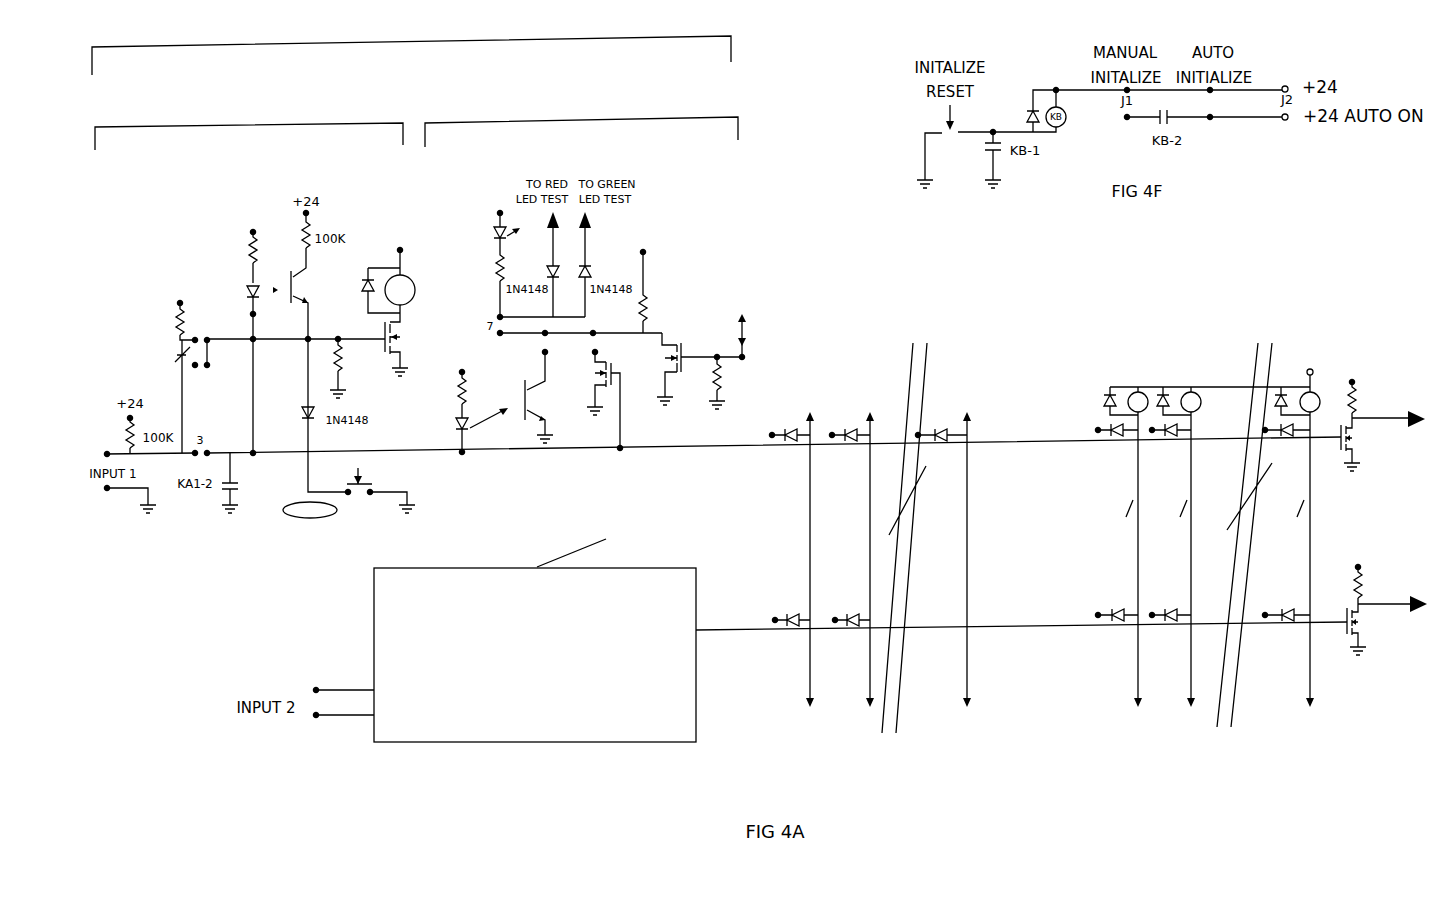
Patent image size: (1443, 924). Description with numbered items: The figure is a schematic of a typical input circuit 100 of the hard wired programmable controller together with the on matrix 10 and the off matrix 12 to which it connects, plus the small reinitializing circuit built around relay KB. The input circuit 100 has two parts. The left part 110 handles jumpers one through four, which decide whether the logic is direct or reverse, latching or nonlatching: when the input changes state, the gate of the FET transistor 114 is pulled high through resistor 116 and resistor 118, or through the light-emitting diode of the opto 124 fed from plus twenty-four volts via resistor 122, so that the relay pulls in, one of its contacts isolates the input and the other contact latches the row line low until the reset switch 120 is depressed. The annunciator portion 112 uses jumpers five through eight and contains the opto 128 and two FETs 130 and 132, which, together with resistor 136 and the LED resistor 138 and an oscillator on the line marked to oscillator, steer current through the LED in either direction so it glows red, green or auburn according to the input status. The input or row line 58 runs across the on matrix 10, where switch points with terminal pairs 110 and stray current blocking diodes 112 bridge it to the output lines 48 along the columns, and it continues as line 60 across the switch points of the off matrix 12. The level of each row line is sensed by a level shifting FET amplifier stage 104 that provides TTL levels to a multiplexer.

The input circuit 100 is at (411, 373).
The input circuit part / switch point terminals 110 is at (760, 467).
The annunciator portion / stray current blocking diode 112 is at (793, 428).
The FET transistor 114 is at (403, 336).
The resistor 116 is at (175, 316).
The resistor 118 is at (355, 373).
The reset switch 120 is at (358, 500).
The resistor 122 is at (247, 248).
The opto 124 is at (250, 283).
The opto 128 is at (490, 396).
The FET 130 is at (656, 372).
The FET 132 is at (590, 380).
The resistor 136 is at (650, 300).
The resistor 138 is at (497, 262).
The on matrix 10 is at (878, 522).
The off matrix 12 is at (1212, 516).
The output lines 48 is at (945, 428).
The input or row line 58 is at (787, 633).
The input or row line continuation 60 is at (1106, 636).
The FET amplifier stage 104 is at (1337, 455).